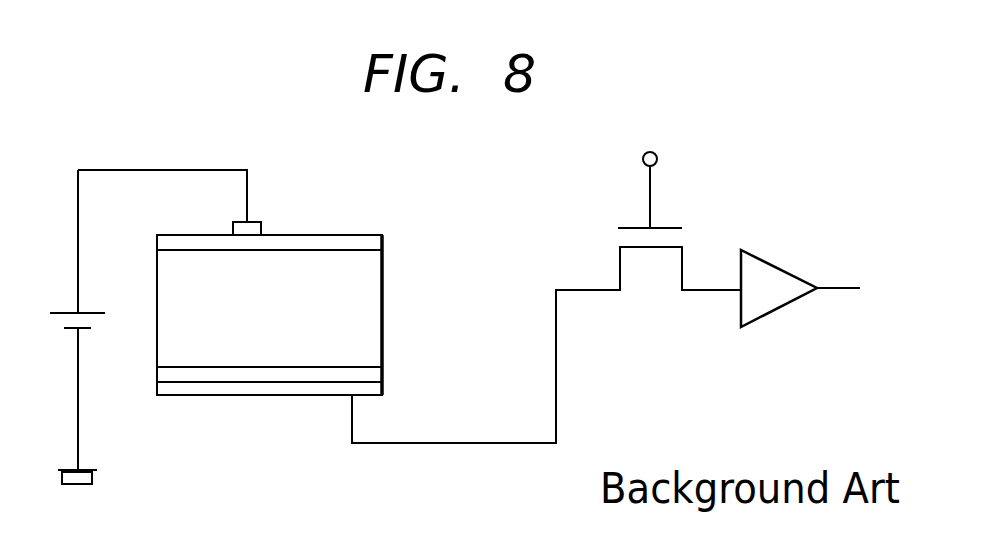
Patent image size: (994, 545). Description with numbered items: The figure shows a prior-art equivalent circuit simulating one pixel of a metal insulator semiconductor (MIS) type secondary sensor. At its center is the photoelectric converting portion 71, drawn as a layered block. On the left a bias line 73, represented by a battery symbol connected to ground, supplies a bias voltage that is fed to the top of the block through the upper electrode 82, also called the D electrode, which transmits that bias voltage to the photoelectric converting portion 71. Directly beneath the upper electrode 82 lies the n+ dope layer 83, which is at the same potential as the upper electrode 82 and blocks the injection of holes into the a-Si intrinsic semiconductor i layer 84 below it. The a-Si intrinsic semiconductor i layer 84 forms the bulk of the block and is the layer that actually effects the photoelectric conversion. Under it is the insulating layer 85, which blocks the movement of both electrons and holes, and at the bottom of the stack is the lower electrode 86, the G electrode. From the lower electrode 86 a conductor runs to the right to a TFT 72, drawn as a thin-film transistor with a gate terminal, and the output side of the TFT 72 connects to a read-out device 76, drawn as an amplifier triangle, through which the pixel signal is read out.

The photoelectric converting portion 71 is at (252, 418).
The TFT 72 is at (690, 202).
The bias line 73 is at (78, 232).
The read-out device 76 is at (778, 264).
The upper electrode (D electrode) 82 is at (258, 222).
The n+ dope layer 83 is at (367, 242).
The a-Si intrinsic semiconductor i layer 84 is at (367, 285).
The insulating layer 85 is at (365, 372).
The lower electrode (G electrode) 86 is at (365, 385).